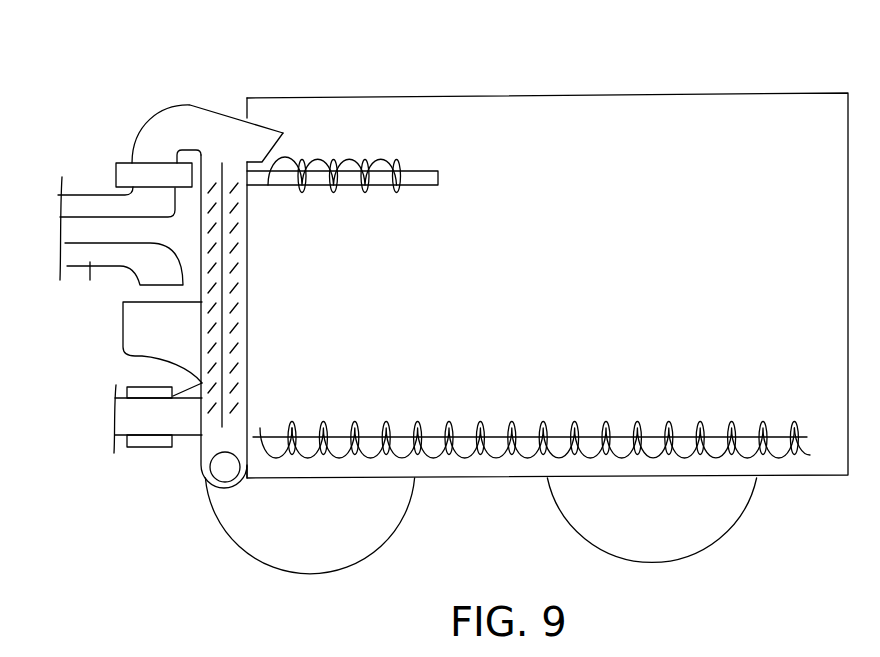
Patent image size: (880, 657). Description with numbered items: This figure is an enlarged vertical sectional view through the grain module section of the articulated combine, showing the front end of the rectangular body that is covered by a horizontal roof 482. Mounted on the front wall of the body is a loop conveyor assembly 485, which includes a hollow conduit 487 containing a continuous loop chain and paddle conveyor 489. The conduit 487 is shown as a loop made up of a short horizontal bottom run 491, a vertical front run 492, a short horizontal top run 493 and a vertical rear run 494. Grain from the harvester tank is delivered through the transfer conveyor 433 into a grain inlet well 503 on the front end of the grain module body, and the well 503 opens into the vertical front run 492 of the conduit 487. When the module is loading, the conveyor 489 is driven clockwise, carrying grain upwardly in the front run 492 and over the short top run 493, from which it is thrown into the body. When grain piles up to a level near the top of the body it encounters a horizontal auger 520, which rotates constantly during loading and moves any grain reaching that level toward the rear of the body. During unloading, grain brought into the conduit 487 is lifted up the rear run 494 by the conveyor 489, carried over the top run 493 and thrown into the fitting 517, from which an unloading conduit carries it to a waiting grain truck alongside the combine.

The transfer conveyor 433 is at (88, 272).
The horizontal roof 482 is at (523, 93).
The loop conveyor assembly 485 is at (113, 474).
The hollow conduit 487 is at (125, 394).
The continuous loop chain and paddle conveyor 489 is at (226, 190).
The short horizontal bottom run 491 is at (225, 472).
The vertical front run 492 is at (213, 357).
The short horizontal top run 493 is at (161, 98).
The vertical rear run 494 is at (240, 273).
The grain inlet well 503 is at (132, 322).
The fitting 517 is at (266, 128).
The horizontal auger 520 is at (378, 132).